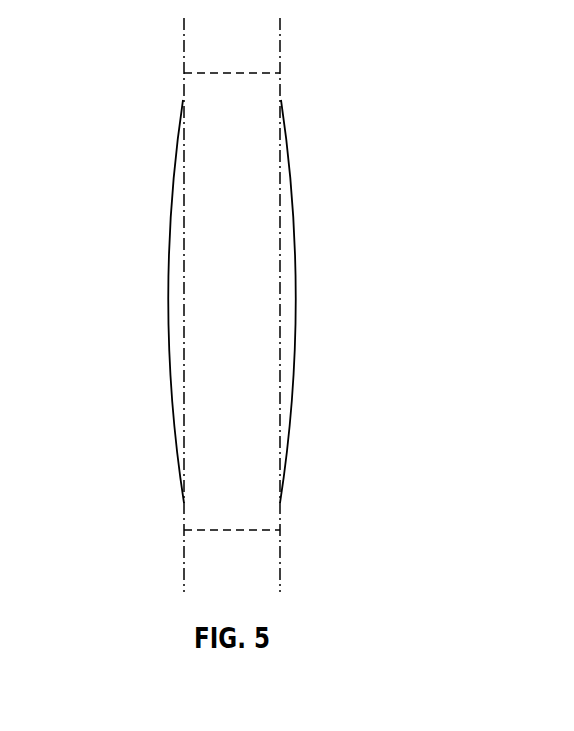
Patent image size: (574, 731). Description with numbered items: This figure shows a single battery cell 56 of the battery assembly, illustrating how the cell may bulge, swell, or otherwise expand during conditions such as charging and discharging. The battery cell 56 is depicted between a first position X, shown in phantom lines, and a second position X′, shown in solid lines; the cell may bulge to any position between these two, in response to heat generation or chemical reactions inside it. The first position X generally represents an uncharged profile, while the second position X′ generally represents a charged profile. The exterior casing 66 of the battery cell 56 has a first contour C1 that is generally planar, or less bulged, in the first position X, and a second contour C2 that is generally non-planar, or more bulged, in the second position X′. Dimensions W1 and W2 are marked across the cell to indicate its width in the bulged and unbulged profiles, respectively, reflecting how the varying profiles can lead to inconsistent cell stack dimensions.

The battery cell 56 is at (134, 112).
The exterior casing 66 is at (178, 283).
The maximum width W1 is at (295, 270).
The end width W2 is at (185, 25).
The first position X is at (186, 303).
The second position X′ is at (168, 348).
The first contour C1 is at (284, 322).
The second contour C2 is at (298, 206).